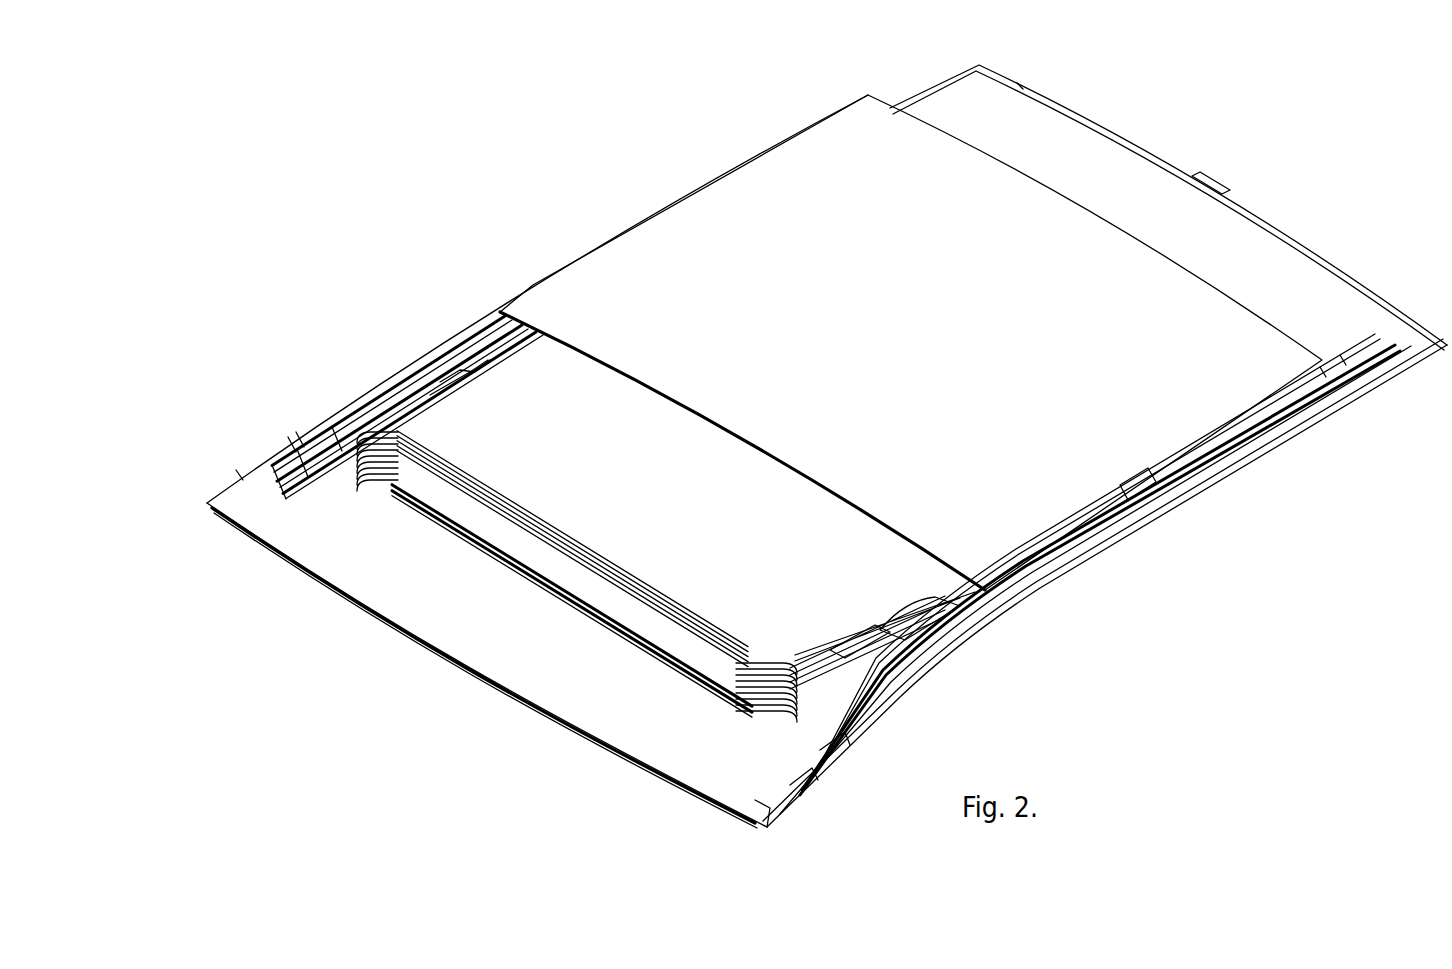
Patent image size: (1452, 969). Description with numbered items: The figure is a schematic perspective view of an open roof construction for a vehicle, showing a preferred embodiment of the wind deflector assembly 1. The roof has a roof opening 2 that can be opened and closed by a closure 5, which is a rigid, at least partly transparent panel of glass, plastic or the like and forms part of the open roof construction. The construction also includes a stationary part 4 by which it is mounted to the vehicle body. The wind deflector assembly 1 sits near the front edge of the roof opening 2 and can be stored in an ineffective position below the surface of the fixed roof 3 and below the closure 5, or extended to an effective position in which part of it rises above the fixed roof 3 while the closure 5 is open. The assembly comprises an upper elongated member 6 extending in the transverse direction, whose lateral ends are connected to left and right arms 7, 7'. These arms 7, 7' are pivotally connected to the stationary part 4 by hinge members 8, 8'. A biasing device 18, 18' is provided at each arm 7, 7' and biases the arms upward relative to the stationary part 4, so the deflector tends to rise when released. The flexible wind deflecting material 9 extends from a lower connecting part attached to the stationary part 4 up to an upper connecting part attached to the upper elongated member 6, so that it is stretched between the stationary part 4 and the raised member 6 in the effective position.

The wind deflector assembly 1 is at (411, 505).
The roof opening 2 is at (603, 420).
The fixed roof 3 is at (487, 622).
The stationary part 4 is at (514, 345).
The closure 5 is at (783, 183).
The upper elongated member 6 is at (486, 502).
The arm 7 is at (955, 716).
The arm 7' is at (365, 338).
The hinge member 8 is at (1015, 692).
The hinge member 8' is at (378, 316).
The flexible wind deflecting material 9 is at (497, 538).
The biasing device 18 is at (1095, 574).
The biasing device 18' is at (215, 372).